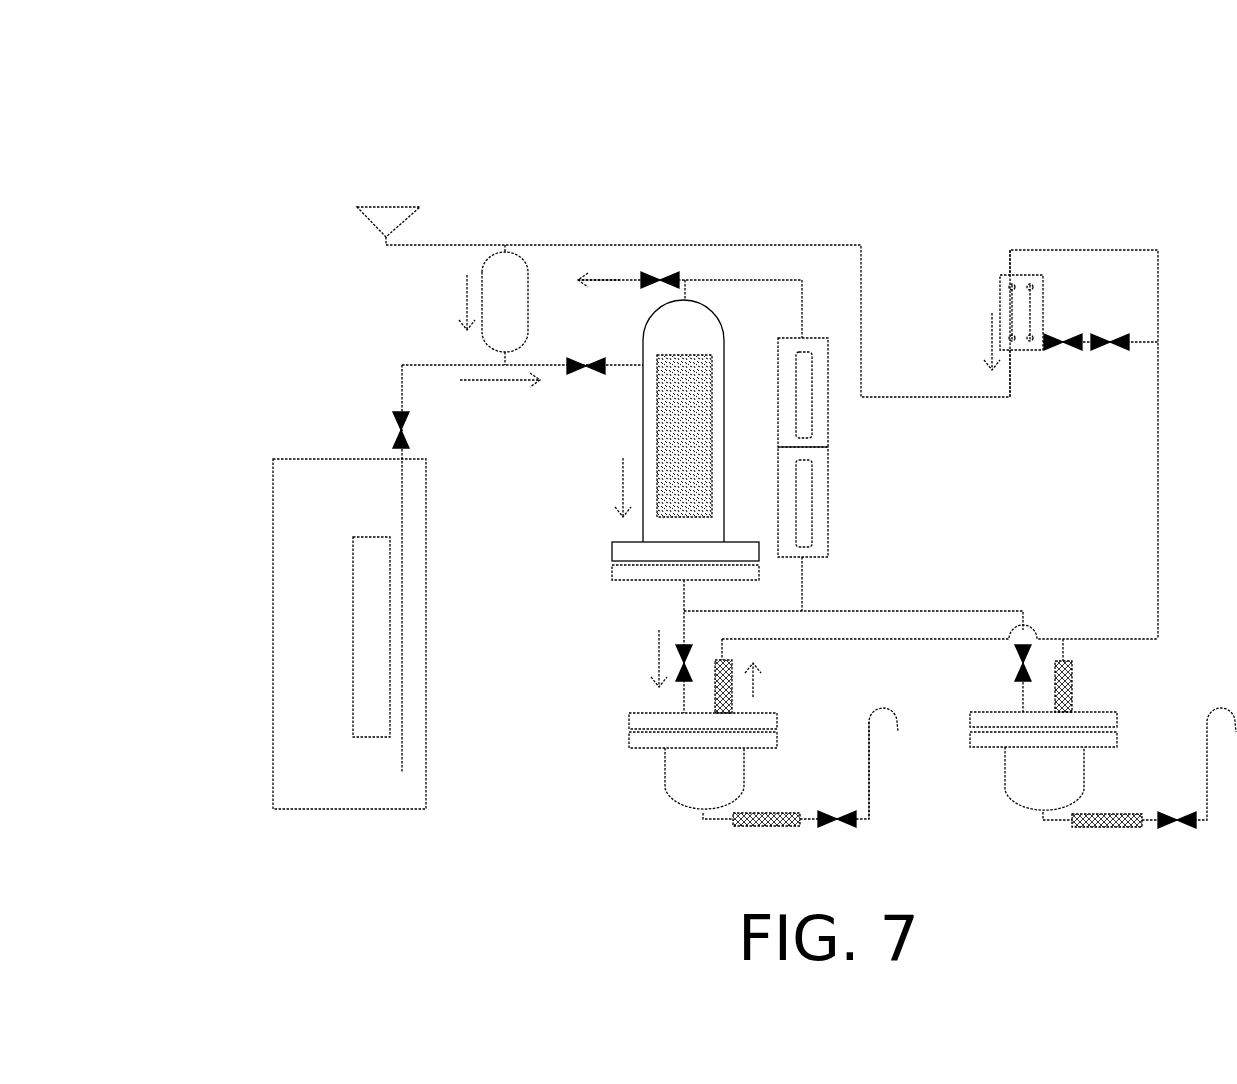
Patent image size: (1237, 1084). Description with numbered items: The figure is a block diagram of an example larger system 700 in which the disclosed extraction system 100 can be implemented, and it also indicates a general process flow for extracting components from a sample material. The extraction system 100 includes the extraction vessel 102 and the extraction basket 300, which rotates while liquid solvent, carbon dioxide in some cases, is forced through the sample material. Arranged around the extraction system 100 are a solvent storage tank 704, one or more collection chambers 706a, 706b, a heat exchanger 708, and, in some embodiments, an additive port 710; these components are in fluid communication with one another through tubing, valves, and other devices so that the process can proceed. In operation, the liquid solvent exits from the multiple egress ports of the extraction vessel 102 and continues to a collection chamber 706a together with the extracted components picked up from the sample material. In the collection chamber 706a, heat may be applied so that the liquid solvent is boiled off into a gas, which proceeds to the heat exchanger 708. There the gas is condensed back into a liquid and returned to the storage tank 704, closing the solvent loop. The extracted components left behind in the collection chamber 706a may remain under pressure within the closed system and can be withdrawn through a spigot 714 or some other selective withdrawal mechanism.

The larger system 700 is at (1065, 98).
The additive port 710 is at (392, 215).
The extraction vessel 102 is at (725, 327).
The extraction basket 300 is at (660, 393).
The extraction system 100 is at (598, 502).
The heat exchanger 708 is at (1027, 303).
The solvent storage tank 704 is at (300, 640).
The collection chamber 706a is at (700, 785).
The collection chamber 706b is at (1045, 787).
The spigot 714 is at (872, 732).